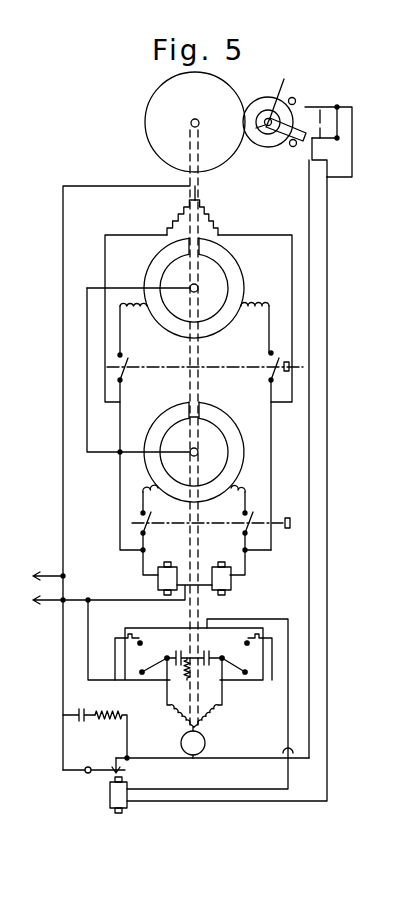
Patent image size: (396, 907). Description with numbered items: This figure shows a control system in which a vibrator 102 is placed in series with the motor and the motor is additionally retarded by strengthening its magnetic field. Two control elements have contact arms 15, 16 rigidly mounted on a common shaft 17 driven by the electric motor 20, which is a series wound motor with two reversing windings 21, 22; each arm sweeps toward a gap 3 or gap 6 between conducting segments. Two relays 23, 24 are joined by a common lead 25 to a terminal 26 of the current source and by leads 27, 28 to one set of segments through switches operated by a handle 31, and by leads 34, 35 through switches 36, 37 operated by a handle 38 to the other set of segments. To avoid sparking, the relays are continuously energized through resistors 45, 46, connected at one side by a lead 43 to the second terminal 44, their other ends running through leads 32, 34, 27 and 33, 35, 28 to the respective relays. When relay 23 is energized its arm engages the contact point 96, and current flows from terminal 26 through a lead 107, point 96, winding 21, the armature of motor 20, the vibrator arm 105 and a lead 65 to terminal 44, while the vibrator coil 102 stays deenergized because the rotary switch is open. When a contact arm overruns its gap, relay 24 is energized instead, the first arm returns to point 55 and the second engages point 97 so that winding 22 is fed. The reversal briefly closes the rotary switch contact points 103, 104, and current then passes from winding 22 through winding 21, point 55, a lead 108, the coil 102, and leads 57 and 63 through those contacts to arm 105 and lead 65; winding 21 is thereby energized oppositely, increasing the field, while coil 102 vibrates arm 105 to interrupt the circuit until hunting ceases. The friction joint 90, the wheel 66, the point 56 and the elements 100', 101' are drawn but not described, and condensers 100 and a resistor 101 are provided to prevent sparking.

The drive wheel 66 is at (230, 99).
The friction joint 90 is at (272, 144).
The resilient contact arm 103 is at (312, 140).
The resilient contact arm 104 is at (331, 106).
The lead 57 is at (329, 470).
The lead 63 is at (309, 437).
The lead 43 is at (63, 382).
The resistor 45 is at (172, 221).
The resistor 46 is at (209, 222).
The lead 33 is at (258, 235).
The lead 32 is at (105, 251).
The gap 6 is at (200, 250).
The contact arm 16 is at (221, 274).
The switch 36 is at (124, 372).
The switch 37 is at (270, 373).
The handle 38 is at (304, 363).
The lead 34 is at (121, 424).
The lead 35 is at (272, 428).
The gap 3 is at (200, 412).
The contact arm 15 is at (198, 435).
The common shaft 17 is at (199, 458).
The handle 31 is at (288, 518).
The relay 23 is at (167, 566).
The relay 24 is at (219, 566).
The lead 27 is at (143, 566).
The lead 28 is at (247, 571).
The second terminal 44 is at (50, 566).
The common lead 25 is at (111, 601).
The terminal 26 is at (39, 601).
The contact point 97 is at (270, 622).
The lead 107 is at (88, 635).
The lead 65 is at (65, 672).
The contact point 96 is at (138, 644).
The contact point 55 is at (141, 675).
The relay contact 56 is at (245, 676).
The capacitor 100' is at (190, 640).
The resistor 101' is at (209, 683).
The reversing winding 21 is at (176, 716).
The reversing winding 22 is at (212, 714).
The electric motor 20 is at (206, 744).
The lead 108 is at (288, 712).
The condenser 100 is at (81, 727).
The resistor 101 is at (112, 735).
The vibrator arm 105 is at (85, 773).
The vibrator coil 102 is at (110, 800).